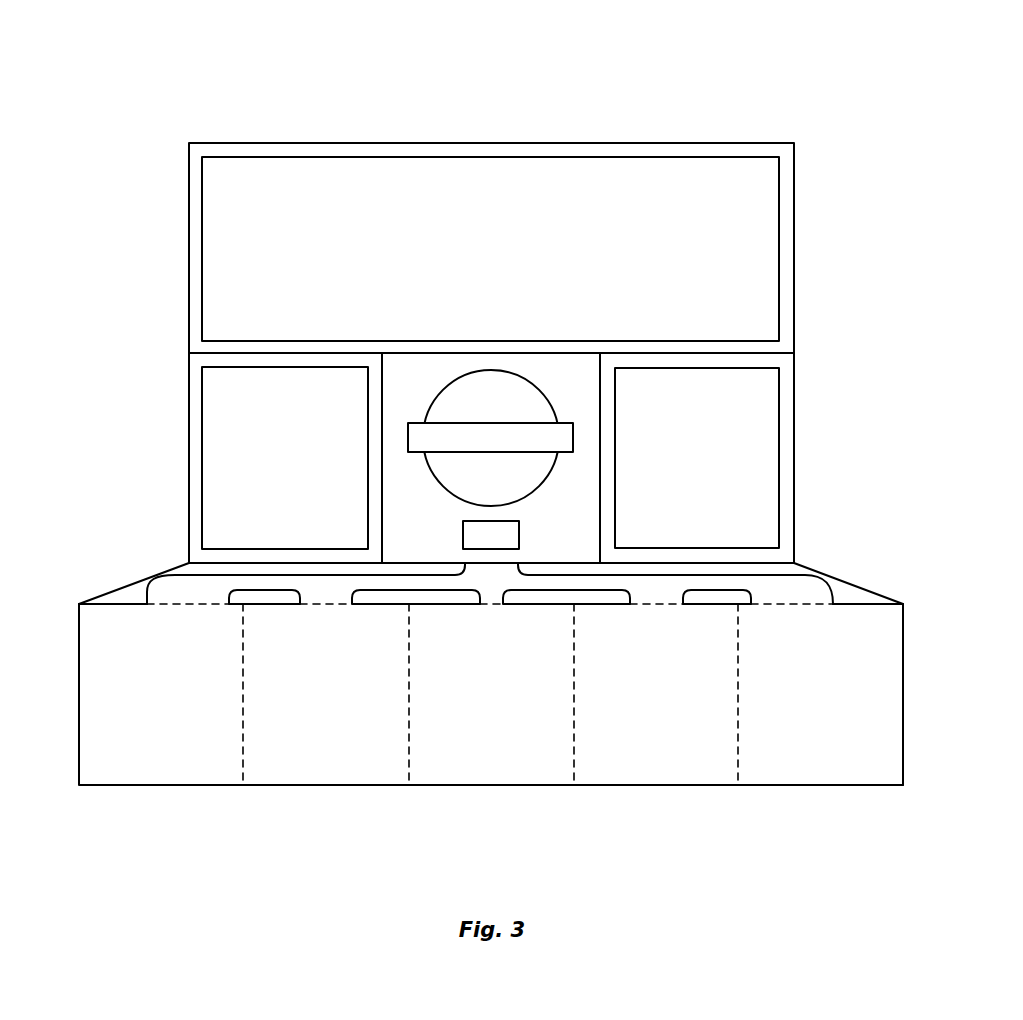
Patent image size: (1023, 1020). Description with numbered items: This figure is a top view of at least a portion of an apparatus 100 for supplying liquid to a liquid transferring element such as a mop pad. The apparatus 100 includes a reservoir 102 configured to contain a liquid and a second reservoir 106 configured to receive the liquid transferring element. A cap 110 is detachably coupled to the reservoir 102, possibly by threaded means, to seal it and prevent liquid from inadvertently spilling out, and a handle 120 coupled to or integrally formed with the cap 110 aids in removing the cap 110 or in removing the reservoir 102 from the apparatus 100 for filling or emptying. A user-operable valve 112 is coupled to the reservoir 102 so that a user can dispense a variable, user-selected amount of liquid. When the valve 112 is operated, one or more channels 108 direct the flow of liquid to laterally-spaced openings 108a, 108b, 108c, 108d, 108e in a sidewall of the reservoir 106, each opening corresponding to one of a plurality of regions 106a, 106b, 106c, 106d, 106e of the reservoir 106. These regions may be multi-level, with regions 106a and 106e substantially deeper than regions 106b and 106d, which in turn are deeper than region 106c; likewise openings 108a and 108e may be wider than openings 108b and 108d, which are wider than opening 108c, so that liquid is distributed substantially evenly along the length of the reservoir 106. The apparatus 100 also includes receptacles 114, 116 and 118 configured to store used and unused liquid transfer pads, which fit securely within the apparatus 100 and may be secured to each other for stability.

The apparatus 100 is at (116, 118).
The reservoir 102 is at (590, 507).
The reservoir 106 is at (903, 692).
The region 106a is at (162, 772).
The region 106b is at (325, 772).
The region 106c is at (492, 772).
The region 106d is at (657, 772).
The region 106e is at (818, 772).
The channels 108 is at (528, 613).
The opening 108a is at (187, 604).
The opening 108b is at (325, 604).
The opening 108c is at (492, 604).
The opening 108d is at (657, 604).
The opening 108e is at (792, 604).
The cap 110 is at (493, 368).
The user-operable valve 112 is at (463, 536).
The receptacle 114 is at (794, 457).
The receptacle 116 is at (189, 460).
The receptacle 118 is at (794, 248).
The handle 120 is at (408, 437).